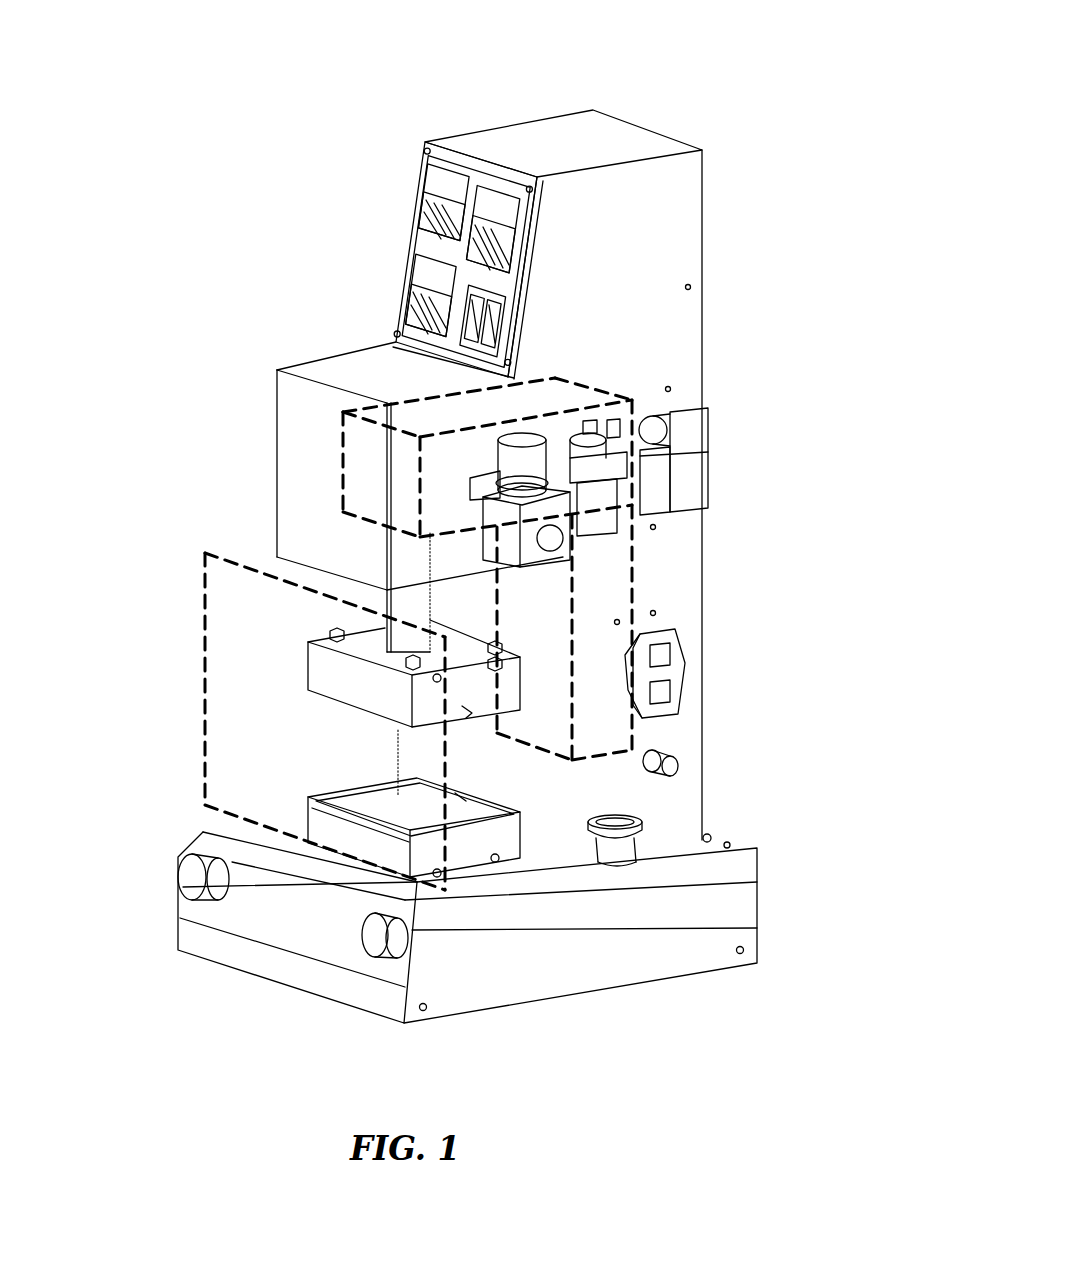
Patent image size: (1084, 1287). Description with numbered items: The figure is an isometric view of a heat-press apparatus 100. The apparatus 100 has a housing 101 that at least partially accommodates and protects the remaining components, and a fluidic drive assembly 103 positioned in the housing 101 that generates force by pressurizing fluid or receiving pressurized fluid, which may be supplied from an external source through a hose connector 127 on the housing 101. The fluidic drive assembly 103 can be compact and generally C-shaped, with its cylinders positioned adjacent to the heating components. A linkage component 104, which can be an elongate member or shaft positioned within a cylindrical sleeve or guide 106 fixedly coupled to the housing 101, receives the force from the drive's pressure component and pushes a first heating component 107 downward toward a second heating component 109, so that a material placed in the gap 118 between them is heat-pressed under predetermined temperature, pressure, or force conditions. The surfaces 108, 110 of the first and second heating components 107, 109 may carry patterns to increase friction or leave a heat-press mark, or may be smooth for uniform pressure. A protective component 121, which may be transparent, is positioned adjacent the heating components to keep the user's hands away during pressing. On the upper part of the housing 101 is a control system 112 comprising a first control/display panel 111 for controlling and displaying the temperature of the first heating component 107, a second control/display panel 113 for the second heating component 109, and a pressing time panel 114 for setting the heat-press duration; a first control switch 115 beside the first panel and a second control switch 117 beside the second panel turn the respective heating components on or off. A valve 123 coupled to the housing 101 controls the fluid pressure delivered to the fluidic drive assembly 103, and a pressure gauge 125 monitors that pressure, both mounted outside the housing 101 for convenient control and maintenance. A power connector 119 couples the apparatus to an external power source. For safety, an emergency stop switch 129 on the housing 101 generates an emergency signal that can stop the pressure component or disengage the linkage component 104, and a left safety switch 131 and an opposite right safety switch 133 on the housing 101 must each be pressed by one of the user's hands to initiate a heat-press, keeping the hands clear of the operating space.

The apparatus 100 is at (702, 31).
The housing 101 is at (683, 177).
The fluidic drive assembly 103 is at (610, 585).
The linkage component 104 is at (400, 558).
The cylindrical sleeve or guide 106 is at (390, 617).
The first heating component 107 is at (467, 711).
The surface of first heating component 108 is at (335, 710).
The second heating component 109 is at (463, 798).
The surface of second heating component 110 is at (342, 776).
The first control/display panel 111 is at (420, 202).
The control system 112 is at (396, 179).
The second control/display panel 113 is at (535, 216).
The pressing time panel 114 is at (400, 308).
The first control switch 115 is at (400, 332).
The second control switch 117 is at (500, 318).
The gap 118 is at (390, 768).
The power connector 119 is at (677, 662).
The protective component 121 is at (105, 657).
The valve 123 is at (687, 477).
The pressure gauge 125 is at (480, 547).
The hose connector 127 is at (680, 762).
The emergency stop switch 129 is at (642, 828).
The left safety switch 131 is at (757, 883).
The right safety switch 133 is at (757, 930).